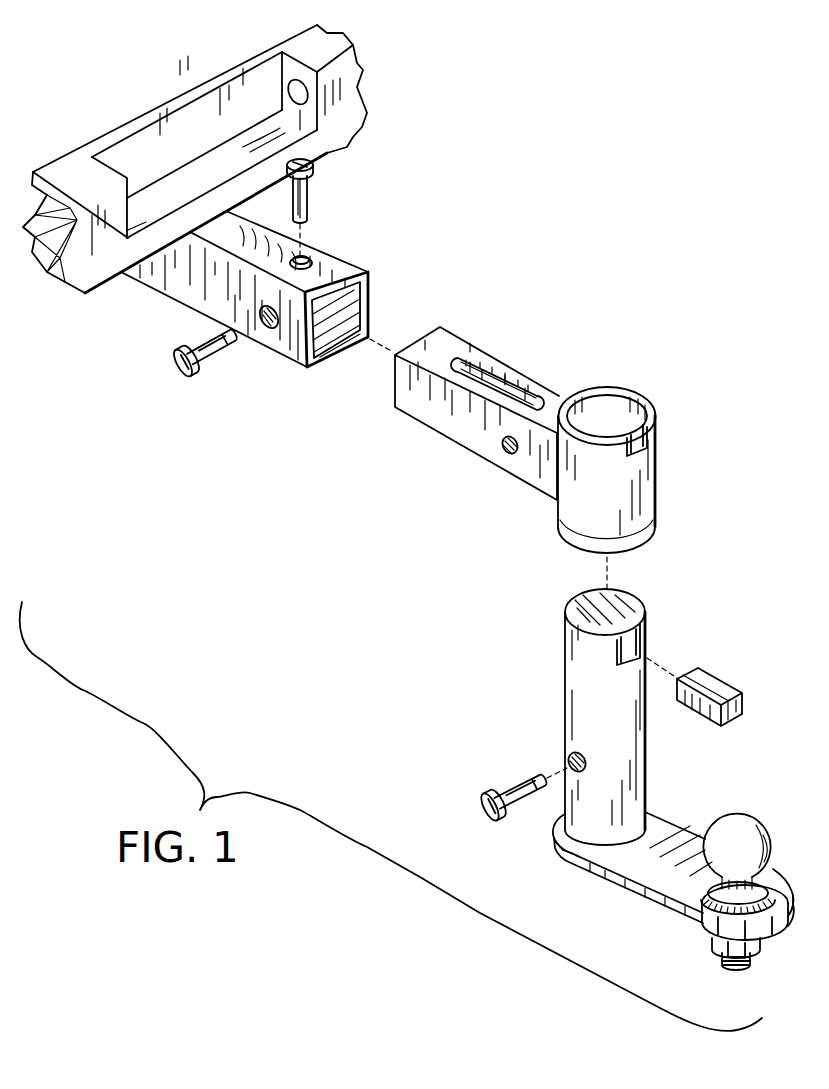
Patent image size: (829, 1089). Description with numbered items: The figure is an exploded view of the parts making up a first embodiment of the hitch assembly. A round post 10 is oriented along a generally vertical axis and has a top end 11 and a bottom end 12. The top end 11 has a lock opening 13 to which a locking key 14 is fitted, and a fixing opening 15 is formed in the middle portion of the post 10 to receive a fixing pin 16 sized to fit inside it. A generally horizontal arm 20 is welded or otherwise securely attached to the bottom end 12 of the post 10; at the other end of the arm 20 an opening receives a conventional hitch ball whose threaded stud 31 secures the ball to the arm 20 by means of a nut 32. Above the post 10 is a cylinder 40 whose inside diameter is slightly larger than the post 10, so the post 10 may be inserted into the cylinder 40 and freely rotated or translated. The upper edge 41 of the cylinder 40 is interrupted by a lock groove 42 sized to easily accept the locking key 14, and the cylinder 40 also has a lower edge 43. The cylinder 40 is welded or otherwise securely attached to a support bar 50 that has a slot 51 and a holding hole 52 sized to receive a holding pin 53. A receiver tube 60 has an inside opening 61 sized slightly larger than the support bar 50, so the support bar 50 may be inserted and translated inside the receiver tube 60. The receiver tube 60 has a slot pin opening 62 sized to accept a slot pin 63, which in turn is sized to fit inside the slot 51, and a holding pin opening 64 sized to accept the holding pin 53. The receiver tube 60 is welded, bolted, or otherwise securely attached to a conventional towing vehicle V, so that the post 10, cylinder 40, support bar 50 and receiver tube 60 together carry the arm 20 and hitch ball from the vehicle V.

The towing vehicle V is at (367, 100).
The post 10 is at (603, 712).
The top end 11 is at (640, 601).
The bottom end 12 is at (568, 842).
The lock opening 13 is at (650, 647).
The locking key 14 is at (710, 685).
The fixing opening 15 is at (570, 753).
The fixing pin 16 is at (490, 797).
The arm 20 is at (655, 871).
The threaded stud 31 is at (722, 962).
The nut 32 is at (758, 947).
The cylinder 40 is at (639, 470).
The upper edge 41 is at (648, 400).
The lock groove 42 is at (653, 448).
The lower edge 43 is at (647, 542).
The support bar 50 is at (459, 413).
The slot 51 is at (497, 367).
The holding hole 52 is at (503, 452).
The holding pin 53 is at (170, 350).
The receiver tube 60 is at (274, 313).
The inside opening 61 is at (362, 308).
The slot pin opening 62 is at (312, 261).
The slot pin 63 is at (310, 200).
The holding pin opening 64 is at (276, 330).